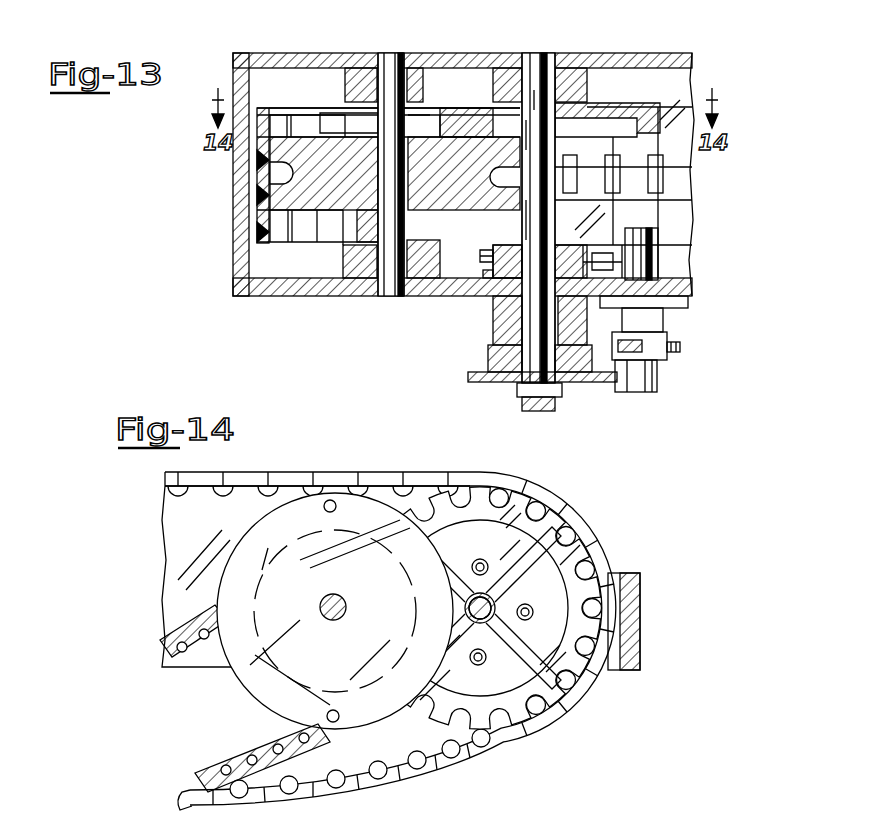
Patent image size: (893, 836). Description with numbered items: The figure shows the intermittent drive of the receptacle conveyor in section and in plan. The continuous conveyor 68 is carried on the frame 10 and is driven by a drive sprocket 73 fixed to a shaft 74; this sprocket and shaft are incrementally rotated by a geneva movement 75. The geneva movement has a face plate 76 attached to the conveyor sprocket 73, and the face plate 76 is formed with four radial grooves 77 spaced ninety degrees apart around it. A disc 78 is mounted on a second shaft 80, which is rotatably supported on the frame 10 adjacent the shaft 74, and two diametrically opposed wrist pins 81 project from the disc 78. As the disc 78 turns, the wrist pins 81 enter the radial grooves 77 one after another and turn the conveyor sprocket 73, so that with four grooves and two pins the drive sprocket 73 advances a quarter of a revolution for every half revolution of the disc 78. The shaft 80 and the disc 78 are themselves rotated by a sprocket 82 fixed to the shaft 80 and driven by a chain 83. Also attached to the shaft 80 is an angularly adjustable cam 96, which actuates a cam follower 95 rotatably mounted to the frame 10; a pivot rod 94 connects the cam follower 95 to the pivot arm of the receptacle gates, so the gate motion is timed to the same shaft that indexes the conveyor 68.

In FIG. 13, the frame 10 is at (674, 44).
In FIG. 14, the frame 10 is at (162, 596).
In FIG. 13, the continuous conveyor 68 is at (262, 230).
In FIG. 14, the continuous conveyor 68 is at (460, 472).
In FIG. 13, the drive sprocket 73 is at (268, 196).
In FIG. 14, the drive sprocket 73 is at (640, 597).
In FIG. 13, the shaft 74 is at (386, 297).
In FIG. 14, the shaft 74 is at (472, 565).
In FIG. 14, the geneva movement 75 is at (405, 755).
In FIG. 13, the face plate 76 is at (340, 120).
In FIG. 14, the face plate 76 is at (545, 585).
In FIG. 14, the radial grooves 77 is at (570, 510).
In FIG. 13, the disc 78 is at (598, 120).
In FIG. 14, the disc 78 is at (335, 611).
In FIG. 13, the shaft 80 is at (545, 412).
In FIG. 14, the shaft 80 is at (346, 606).
In FIG. 14, the wrist pins 81 is at (328, 512).
In FIG. 13, the sprocket 82 is at (490, 272).
In FIG. 14, the chain 83 is at (248, 765).
In FIG. 13, the pivot rod 94 is at (680, 347).
In FIG. 13, the cam follower 95 is at (652, 392).
In FIG. 13, the angularly adjustable cam 96 is at (593, 383).